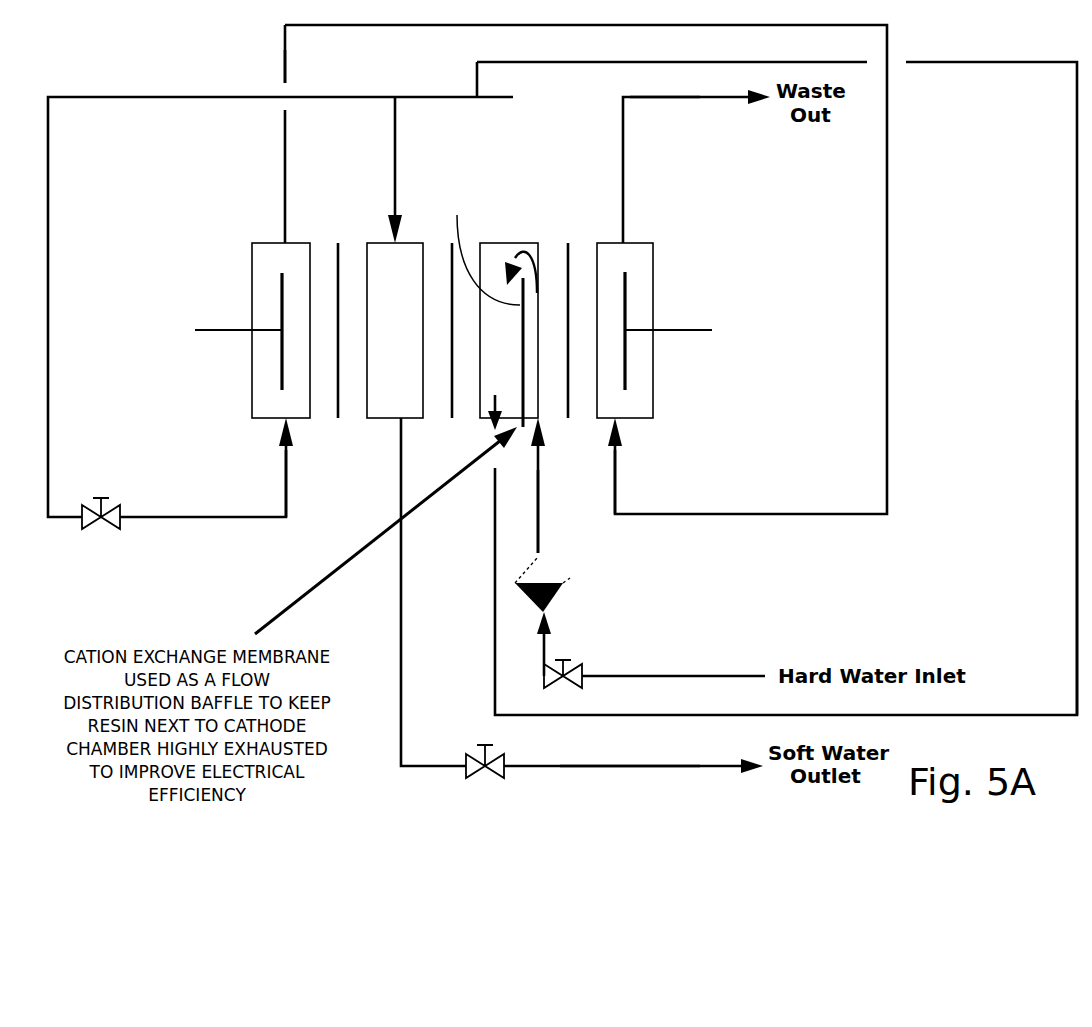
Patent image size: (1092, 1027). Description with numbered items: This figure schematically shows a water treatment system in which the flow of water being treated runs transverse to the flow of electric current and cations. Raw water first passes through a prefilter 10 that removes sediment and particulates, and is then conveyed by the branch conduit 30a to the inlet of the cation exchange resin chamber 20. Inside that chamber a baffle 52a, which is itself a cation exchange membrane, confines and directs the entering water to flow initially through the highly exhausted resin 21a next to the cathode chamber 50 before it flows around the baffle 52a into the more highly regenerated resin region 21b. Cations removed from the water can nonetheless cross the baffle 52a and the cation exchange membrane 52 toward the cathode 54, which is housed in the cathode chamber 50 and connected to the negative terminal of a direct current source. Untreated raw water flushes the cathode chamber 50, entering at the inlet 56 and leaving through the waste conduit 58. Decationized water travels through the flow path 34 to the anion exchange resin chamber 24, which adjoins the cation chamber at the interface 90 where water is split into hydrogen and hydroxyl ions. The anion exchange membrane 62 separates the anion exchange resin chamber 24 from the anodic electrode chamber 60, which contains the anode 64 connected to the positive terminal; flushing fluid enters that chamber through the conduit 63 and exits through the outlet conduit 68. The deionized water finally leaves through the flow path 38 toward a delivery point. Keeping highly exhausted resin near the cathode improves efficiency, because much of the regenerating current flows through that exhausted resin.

The prefilter 10 is at (568, 585).
The cation exchange resin chamber 20 is at (509, 330).
The highly exhausted resin 21a is at (530, 353).
The more highly regenerated resin region 21b is at (495, 257).
The anion exchange resin chamber 24 is at (395, 330).
The branch conduit 30a is at (540, 497).
The flow path 34 is at (1073, 520).
The flow path 38 is at (623, 768).
The cathode chamber 50 is at (655, 420).
The cation exchange membrane 52 is at (569, 345).
The baffle 52a is at (476, 246).
The cathode 54 is at (627, 295).
The inlet 56 is at (618, 470).
The waste conduit 58 is at (718, 98).
The anodic electrode chamber 60 is at (250, 383).
The anion exchange membrane 62 is at (341, 345).
The conduit 63 is at (283, 470).
The anode 64 is at (278, 295).
The outlet conduit 68 is at (283, 60).
The interface 90 is at (453, 344).